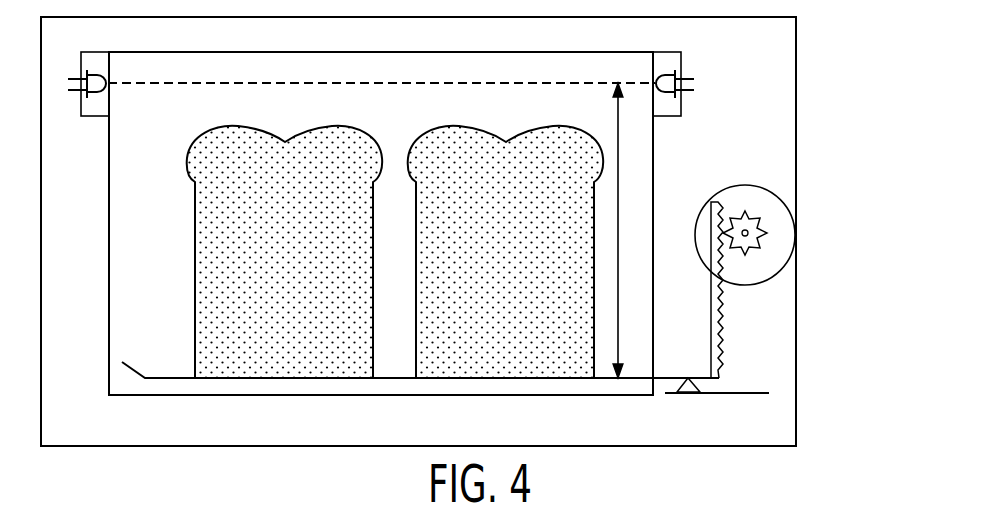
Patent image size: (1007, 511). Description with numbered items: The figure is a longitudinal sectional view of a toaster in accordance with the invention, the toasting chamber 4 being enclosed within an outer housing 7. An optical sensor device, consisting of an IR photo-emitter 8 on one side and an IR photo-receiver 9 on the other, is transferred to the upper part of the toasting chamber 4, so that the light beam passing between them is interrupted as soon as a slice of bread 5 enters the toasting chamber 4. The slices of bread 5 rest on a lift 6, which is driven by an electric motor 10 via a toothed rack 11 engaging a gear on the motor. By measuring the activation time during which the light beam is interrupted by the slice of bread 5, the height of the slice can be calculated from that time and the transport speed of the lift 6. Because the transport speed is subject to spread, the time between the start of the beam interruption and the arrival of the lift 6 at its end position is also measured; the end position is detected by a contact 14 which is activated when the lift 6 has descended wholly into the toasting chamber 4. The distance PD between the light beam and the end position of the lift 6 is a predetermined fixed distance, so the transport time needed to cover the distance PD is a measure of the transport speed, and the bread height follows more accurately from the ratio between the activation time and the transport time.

The toasting chamber 4 is at (375, 52).
The slice of bread 5 is at (300, 355).
The lift 6 is at (170, 378).
The outer housing 7 is at (797, 47).
The IR photo-emitter 8 is at (95, 52).
The IR photo-receiver 9 is at (667, 52).
The electric motor 10 is at (745, 185).
The toothed rack 11 is at (724, 312).
The contact 14 is at (752, 395).
The distance PD is at (618, 165).